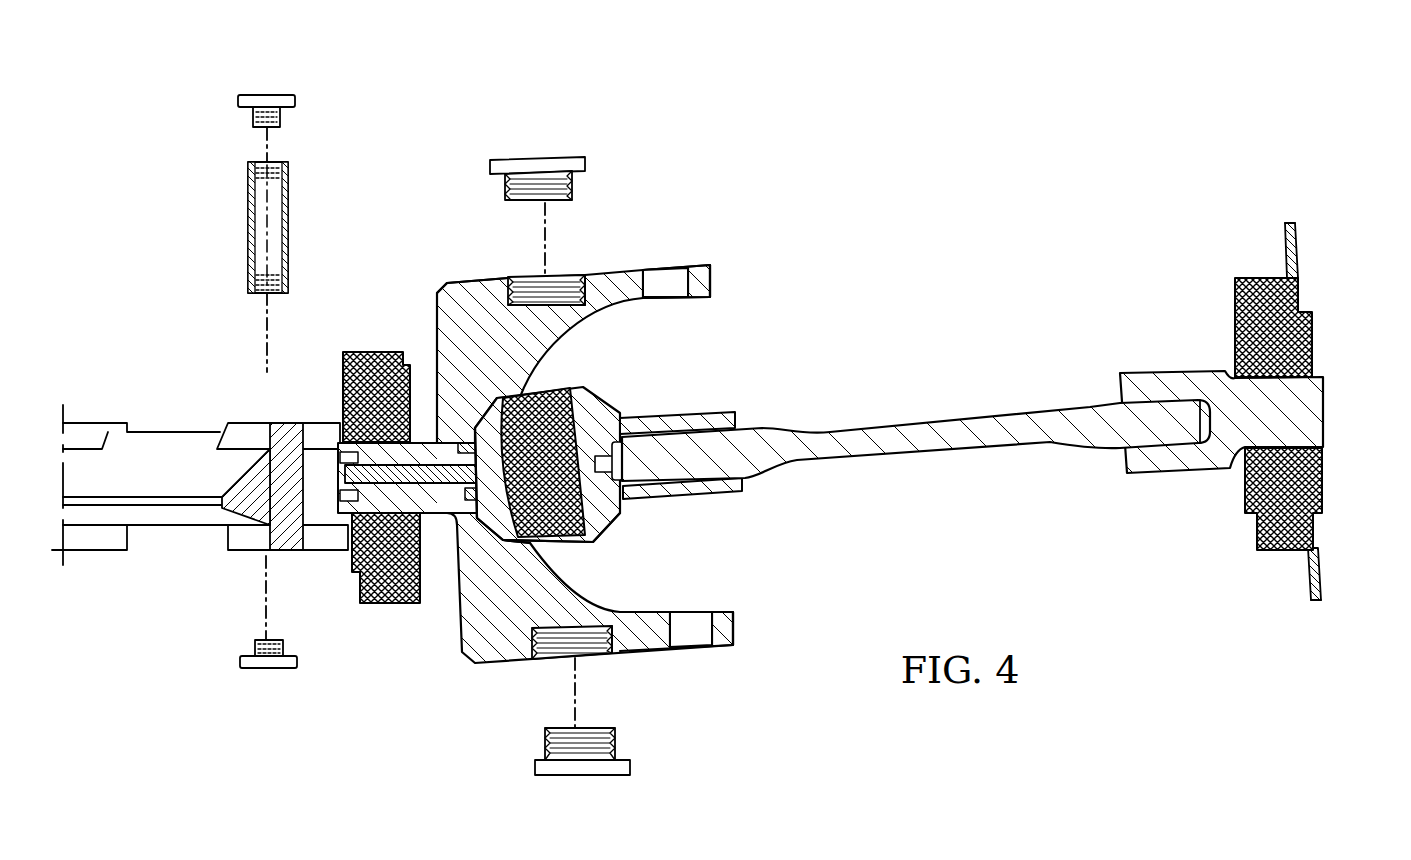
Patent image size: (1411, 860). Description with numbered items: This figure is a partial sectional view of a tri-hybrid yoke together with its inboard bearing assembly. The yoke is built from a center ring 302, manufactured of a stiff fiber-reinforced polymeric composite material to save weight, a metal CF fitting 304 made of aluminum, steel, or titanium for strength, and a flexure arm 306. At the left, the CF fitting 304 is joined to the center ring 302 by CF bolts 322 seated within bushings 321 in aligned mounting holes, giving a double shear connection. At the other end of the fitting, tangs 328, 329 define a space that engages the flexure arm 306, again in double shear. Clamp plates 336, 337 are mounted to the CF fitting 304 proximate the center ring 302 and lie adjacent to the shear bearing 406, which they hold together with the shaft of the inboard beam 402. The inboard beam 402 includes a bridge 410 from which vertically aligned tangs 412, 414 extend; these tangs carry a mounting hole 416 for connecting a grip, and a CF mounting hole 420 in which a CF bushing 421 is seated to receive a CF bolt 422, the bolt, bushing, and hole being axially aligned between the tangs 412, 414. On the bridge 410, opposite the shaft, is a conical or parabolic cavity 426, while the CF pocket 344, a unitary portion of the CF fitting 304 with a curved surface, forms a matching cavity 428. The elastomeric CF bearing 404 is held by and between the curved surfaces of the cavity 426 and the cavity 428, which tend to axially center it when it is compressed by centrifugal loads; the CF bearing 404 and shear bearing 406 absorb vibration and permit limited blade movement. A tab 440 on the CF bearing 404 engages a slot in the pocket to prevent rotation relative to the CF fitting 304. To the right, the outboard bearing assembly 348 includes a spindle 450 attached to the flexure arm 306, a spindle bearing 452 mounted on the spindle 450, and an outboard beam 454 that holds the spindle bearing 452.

The center ring 302 is at (190, 517).
The CF fitting 304 is at (325, 545).
The flexure arm 306 is at (905, 430).
The bushing 321 is at (248, 230).
The CF bolt 322 is at (268, 95).
The tang 328 is at (703, 416).
The tang 329 is at (705, 495).
The clamp plate 336 is at (355, 352).
The clamp plate 337 is at (385, 603).
The CF pocket 344 is at (595, 535).
The outboard bearing assembly 348 is at (1277, 196).
The inboard beam 402 is at (488, 286).
The CF bearing 404 is at (545, 395).
The shear bearing 406 is at (343, 413).
The bridge 410 is at (442, 352).
The tang 412 is at (710, 282).
The tang 414 is at (733, 630).
The mounting hole 416 is at (657, 284).
The CF mounting hole 420 is at (548, 278).
The CF bushing 421 is at (612, 272).
The CF bolt 422 is at (540, 158).
The cavity 426 is at (500, 525).
The cavity 428 is at (600, 400).
The tab 440 is at (620, 490).
The spindle 450 is at (1150, 380).
The spindle bearing 452 is at (1312, 335).
The outboard beam 454 is at (1297, 258).